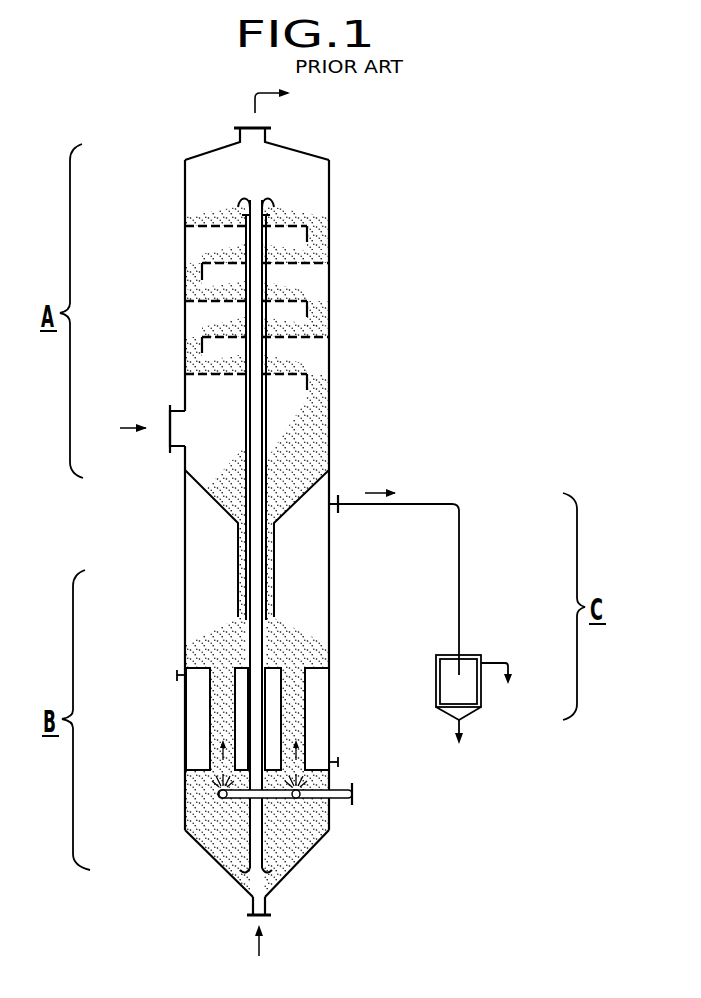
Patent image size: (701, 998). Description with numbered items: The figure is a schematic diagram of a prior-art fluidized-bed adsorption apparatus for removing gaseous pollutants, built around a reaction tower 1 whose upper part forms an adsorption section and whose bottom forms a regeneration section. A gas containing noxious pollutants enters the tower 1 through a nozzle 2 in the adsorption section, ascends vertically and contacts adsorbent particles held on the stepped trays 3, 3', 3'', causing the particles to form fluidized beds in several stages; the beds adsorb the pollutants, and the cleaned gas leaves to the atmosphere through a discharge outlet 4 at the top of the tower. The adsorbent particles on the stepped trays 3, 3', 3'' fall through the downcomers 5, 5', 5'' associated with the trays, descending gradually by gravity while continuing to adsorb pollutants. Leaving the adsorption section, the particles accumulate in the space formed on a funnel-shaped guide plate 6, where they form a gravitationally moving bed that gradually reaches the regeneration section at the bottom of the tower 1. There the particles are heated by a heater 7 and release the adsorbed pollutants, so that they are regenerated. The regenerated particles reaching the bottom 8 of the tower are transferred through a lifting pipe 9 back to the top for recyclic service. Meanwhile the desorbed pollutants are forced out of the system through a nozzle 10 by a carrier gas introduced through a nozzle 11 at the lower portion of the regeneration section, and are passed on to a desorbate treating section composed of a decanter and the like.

The reaction tower 1 is at (345, 195).
The nozzle 2 is at (170, 416).
The stepped tray 3 is at (231, 371).
The stepped tray 3' is at (285, 334).
The stepped tray 3'' is at (231, 294).
The discharge outlet 4 is at (260, 127).
The downcomer 5 is at (334, 313).
The downcomer 5' is at (179, 308).
The downcomer 5'' is at (341, 304).
The funnel-shaped guide plate 6 is at (238, 557).
The heater 7 is at (313, 710).
The bottom 8 is at (267, 890).
The lifting pipe 9 is at (253, 845).
The nozzle 10 is at (338, 497).
The nozzle 11 is at (355, 793).